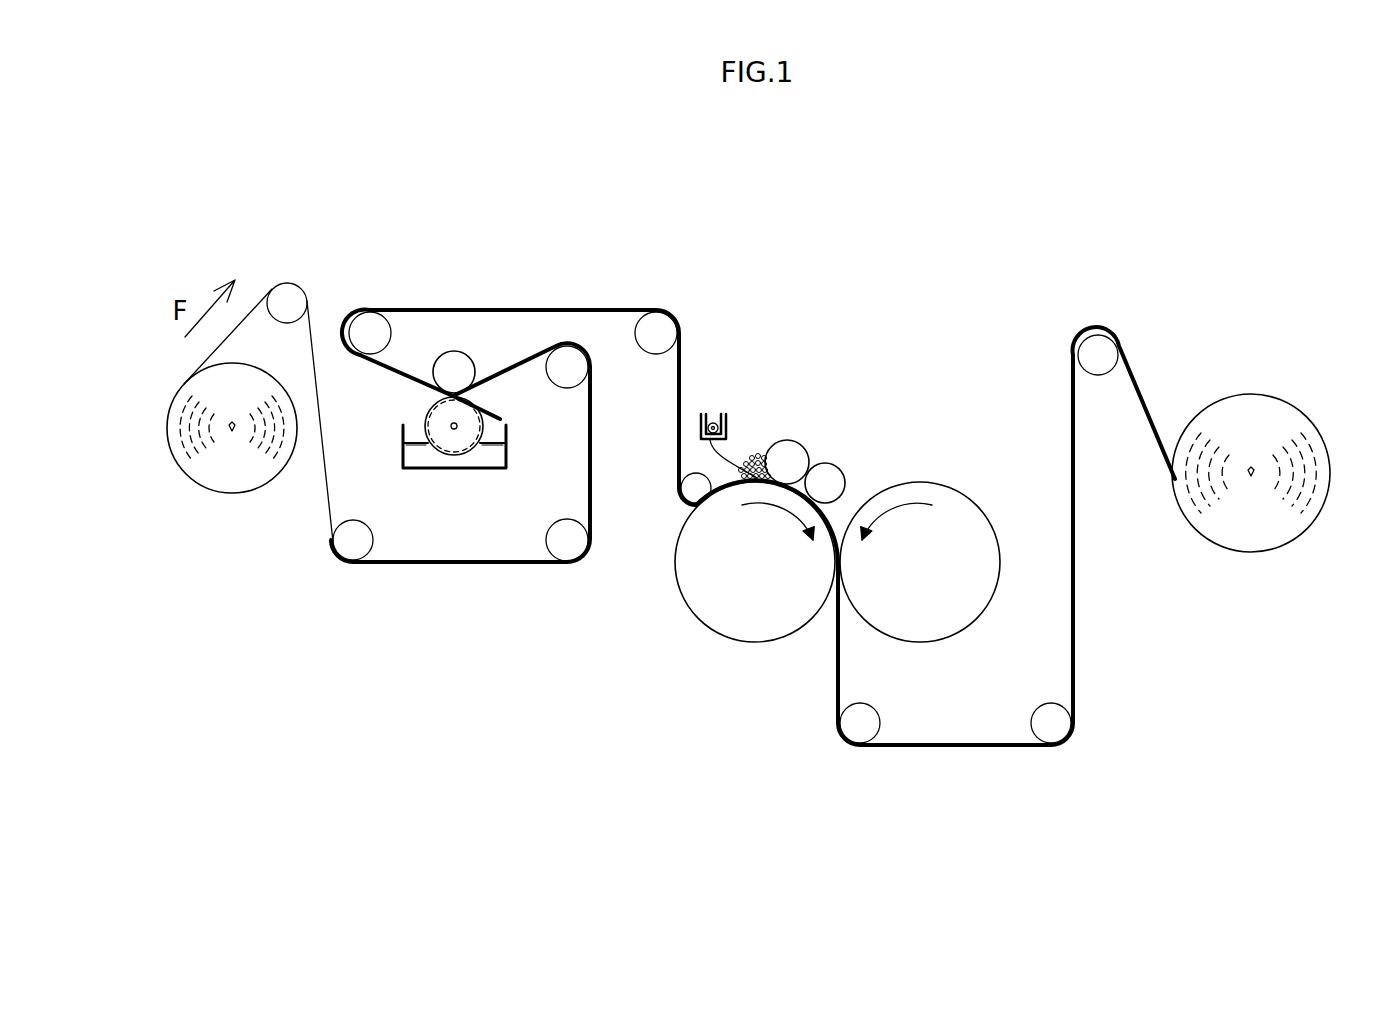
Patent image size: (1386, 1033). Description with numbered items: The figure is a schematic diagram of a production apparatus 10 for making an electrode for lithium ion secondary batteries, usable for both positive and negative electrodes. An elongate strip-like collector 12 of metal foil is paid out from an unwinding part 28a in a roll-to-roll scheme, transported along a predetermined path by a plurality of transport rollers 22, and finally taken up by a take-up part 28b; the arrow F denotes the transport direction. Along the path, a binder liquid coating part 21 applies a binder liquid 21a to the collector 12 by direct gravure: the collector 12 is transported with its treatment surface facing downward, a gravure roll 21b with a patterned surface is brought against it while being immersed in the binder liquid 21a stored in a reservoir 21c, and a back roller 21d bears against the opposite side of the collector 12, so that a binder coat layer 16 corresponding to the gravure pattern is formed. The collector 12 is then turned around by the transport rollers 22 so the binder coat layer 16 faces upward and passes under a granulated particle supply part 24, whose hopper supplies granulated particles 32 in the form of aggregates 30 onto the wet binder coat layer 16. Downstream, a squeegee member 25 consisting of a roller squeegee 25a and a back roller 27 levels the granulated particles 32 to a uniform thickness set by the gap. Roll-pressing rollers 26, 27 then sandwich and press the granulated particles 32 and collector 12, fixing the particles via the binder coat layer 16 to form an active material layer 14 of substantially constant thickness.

The production apparatus 10 is at (990, 265).
The collector 12 is at (440, 562).
The active material layer 14 is at (945, 746).
The binder coat layer 16 is at (510, 310).
The binder liquid coating part 21 is at (510, 437).
The binder liquid 21a is at (417, 453).
The gravure roll 21b is at (463, 445).
The reservoir 21c is at (432, 468).
The back roller 21d is at (452, 352).
The transport rollers 22 is at (287, 283).
The granulated particle supply part 24 is at (712, 400).
The squeegee member 25 is at (838, 445).
The roller squeegee 25a is at (801, 446).
The roll-pressing roller 26 is at (959, 492).
The roll-pressing roller 27 is at (735, 639).
The unwinding part 28a is at (226, 492).
The take-up part 28b is at (1282, 542).
The aggregates 30 is at (787, 423).
The granulated particles 32 is at (748, 452).